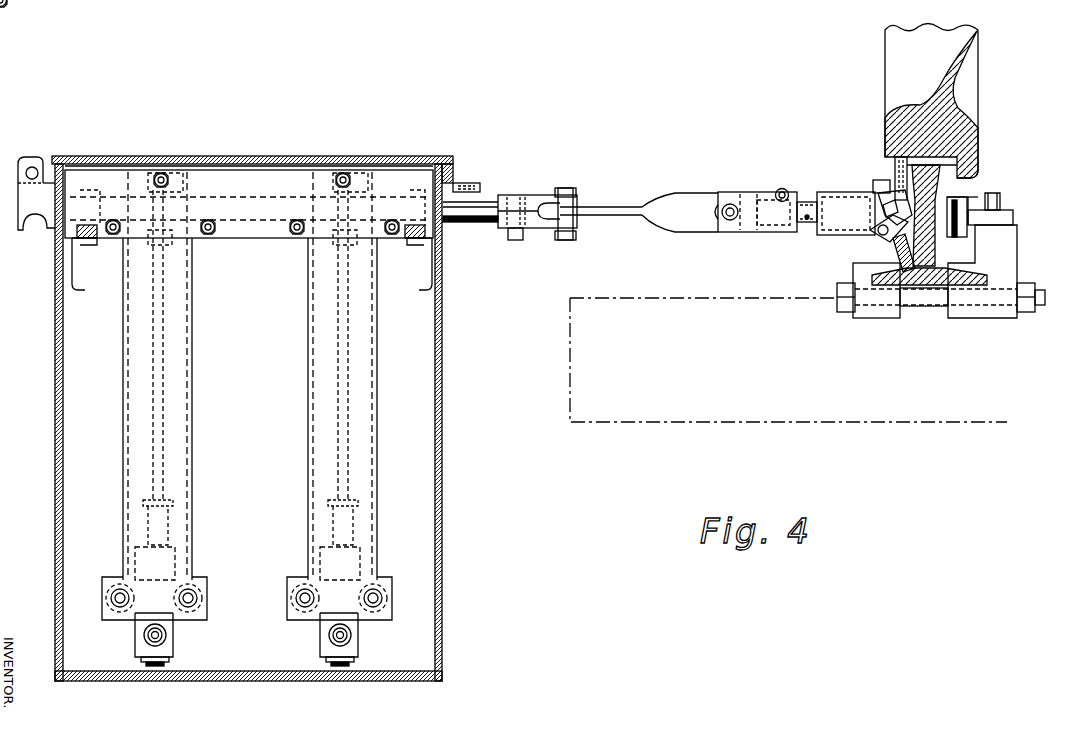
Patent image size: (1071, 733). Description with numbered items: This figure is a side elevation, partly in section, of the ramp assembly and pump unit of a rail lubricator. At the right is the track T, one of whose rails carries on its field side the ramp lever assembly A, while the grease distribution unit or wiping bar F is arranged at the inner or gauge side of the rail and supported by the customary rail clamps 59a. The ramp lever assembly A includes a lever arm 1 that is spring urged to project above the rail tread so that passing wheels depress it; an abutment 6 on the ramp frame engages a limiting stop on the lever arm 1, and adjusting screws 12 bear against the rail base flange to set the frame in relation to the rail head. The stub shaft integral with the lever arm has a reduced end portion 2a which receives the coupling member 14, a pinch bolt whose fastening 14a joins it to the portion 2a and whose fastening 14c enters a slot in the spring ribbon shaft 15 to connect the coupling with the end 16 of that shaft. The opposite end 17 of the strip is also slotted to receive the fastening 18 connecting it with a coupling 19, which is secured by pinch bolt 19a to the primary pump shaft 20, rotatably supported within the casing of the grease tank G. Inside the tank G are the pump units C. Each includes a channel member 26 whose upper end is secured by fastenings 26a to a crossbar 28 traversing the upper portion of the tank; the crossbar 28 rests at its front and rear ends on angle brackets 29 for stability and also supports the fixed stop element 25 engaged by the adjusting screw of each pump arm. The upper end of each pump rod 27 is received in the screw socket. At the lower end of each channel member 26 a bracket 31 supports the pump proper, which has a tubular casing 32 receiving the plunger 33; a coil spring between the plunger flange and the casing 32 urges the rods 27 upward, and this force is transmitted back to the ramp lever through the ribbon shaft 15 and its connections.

The grease tank G is at (58, 379).
The crossbar 28 is at (262, 170).
The fixed stop element 25 is at (364, 159).
The fastenings 26a is at (170, 176).
The angle brackets 29 is at (76, 276).
The channel member 26 is at (195, 400).
The pump rod 27 is at (165, 343).
The pump units C is at (152, 427).
The plunger 33 is at (145, 518).
The bracket 31 is at (205, 580).
The tubular casing 32 is at (176, 639).
The primary pump shaft 20 is at (475, 224).
The coupling 19 is at (540, 195).
The pinch bolt 19a is at (518, 240).
The fastening 18 is at (566, 188).
The end of the strip 17 is at (600, 207).
The spring ribbon shaft 15 is at (700, 193).
The end of the ribbon shaft 16 is at (691, 232).
The coupling member 14 is at (765, 232).
The fastening 14a is at (779, 188).
The fastening 14c is at (730, 220).
The reduced end portion 2a is at (804, 201).
The ramp lever A is at (868, 212).
The abutment 6 is at (873, 182).
The lever arm 1 is at (895, 166).
The track T is at (936, 263).
The adjusting screws 12 is at (853, 270).
The wiping bars F is at (965, 190).
The rail clamps 59a is at (1013, 256).